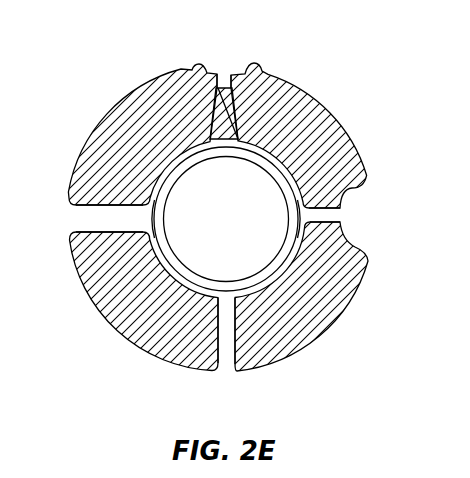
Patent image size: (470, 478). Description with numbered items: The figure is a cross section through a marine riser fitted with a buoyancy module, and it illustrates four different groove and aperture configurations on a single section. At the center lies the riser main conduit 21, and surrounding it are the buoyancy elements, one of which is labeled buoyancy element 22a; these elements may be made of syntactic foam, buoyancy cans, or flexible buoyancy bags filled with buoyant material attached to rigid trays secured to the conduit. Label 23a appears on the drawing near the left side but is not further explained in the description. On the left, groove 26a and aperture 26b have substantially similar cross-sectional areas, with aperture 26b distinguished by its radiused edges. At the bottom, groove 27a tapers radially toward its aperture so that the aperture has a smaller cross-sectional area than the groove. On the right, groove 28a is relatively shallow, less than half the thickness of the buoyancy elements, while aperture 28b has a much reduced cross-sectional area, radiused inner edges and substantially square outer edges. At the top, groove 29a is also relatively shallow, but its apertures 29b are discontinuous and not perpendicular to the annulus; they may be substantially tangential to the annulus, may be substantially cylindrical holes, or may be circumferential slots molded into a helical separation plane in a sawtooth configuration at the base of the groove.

The riser main conduit 21 is at (167, 186).
The buoyancy element 22a is at (158, 266).
The lobe / wall segment 23a is at (235, 239).
The groove 26a is at (95, 218).
The aperture 26b is at (140, 218).
The groove 27a is at (222, 352).
The groove 28a is at (340, 220).
The aperture 28b is at (316, 215).
The groove 29a is at (224, 70).
The discontinuous apertures 29b is at (210, 115).